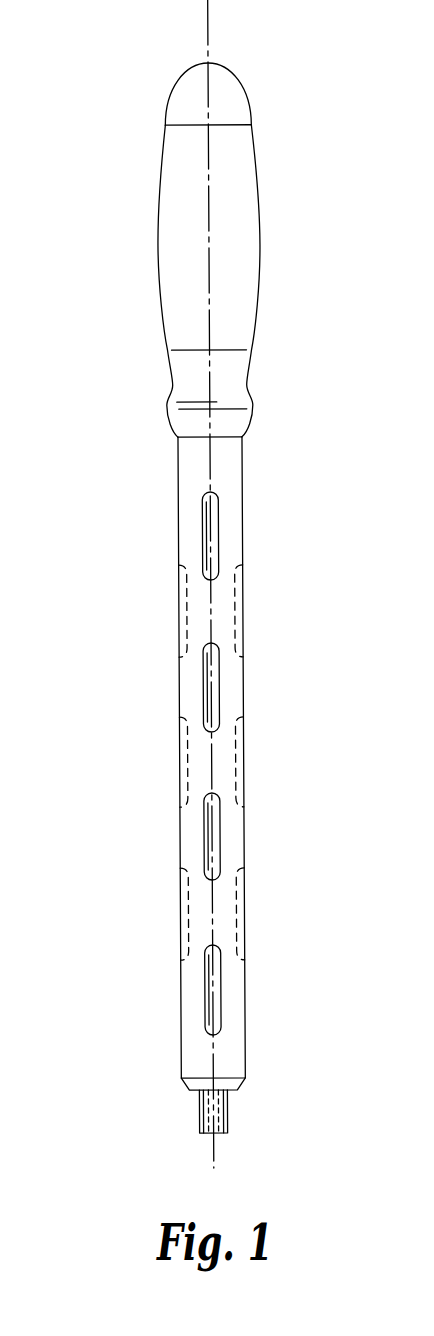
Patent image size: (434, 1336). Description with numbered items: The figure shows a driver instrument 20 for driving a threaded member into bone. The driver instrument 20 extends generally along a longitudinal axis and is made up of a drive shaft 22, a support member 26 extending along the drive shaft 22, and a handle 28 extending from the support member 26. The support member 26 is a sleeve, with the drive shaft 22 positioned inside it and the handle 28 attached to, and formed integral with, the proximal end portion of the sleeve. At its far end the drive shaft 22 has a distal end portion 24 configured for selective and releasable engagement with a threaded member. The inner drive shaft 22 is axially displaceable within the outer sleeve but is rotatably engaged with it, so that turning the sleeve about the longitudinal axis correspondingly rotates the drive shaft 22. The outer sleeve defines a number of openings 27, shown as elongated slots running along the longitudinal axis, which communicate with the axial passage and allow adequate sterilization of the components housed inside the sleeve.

The driver instrument 20 is at (105, 90).
The drive shaft 22 is at (233, 1099).
The distal end portion 24 is at (188, 1112).
The support member 26 is at (252, 612).
The openings 27 is at (222, 703).
The handle 28 is at (143, 244).